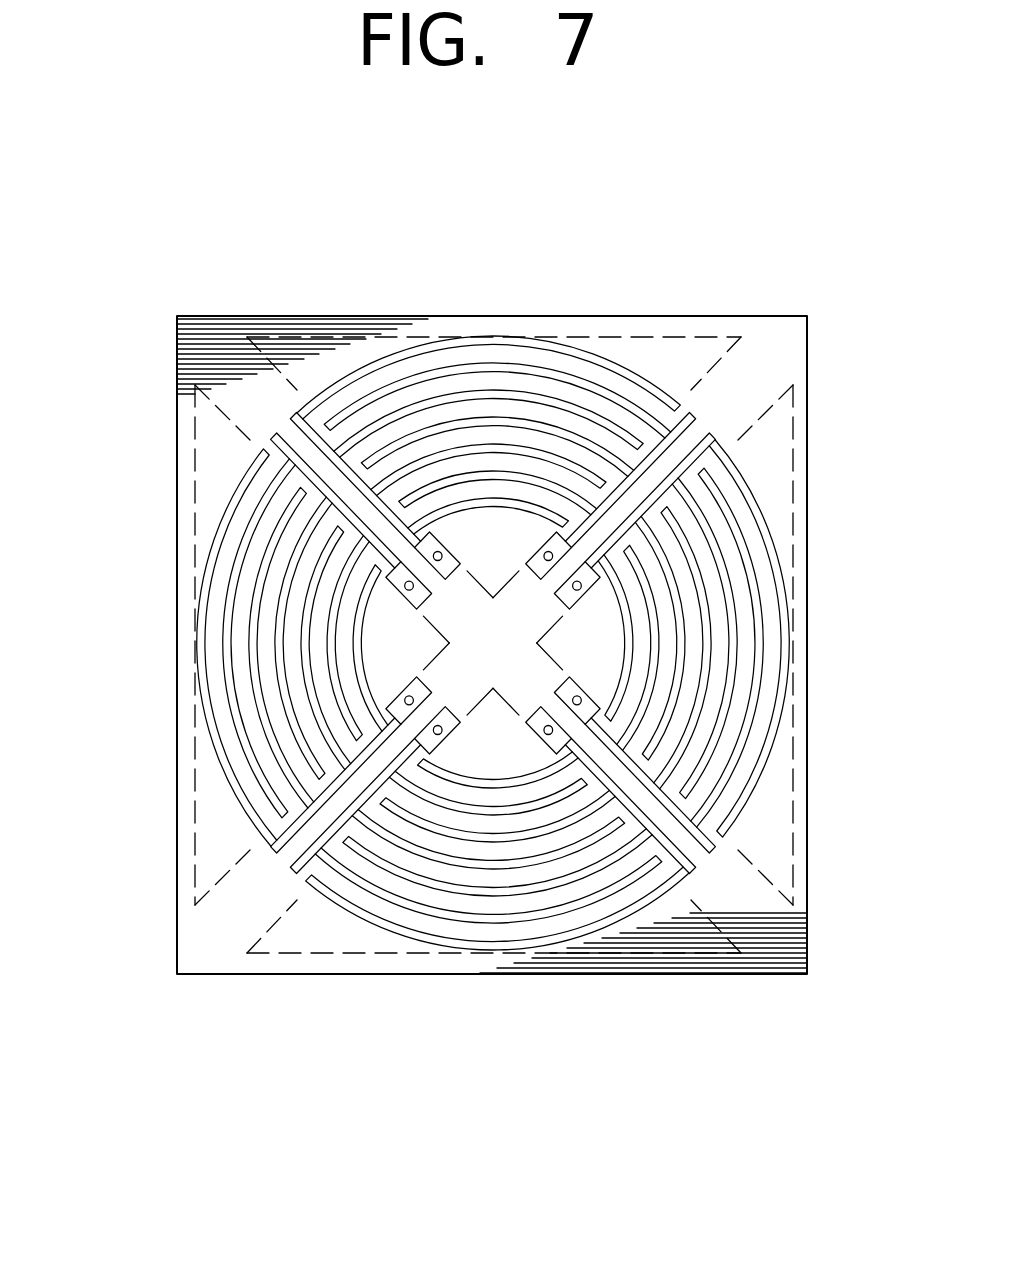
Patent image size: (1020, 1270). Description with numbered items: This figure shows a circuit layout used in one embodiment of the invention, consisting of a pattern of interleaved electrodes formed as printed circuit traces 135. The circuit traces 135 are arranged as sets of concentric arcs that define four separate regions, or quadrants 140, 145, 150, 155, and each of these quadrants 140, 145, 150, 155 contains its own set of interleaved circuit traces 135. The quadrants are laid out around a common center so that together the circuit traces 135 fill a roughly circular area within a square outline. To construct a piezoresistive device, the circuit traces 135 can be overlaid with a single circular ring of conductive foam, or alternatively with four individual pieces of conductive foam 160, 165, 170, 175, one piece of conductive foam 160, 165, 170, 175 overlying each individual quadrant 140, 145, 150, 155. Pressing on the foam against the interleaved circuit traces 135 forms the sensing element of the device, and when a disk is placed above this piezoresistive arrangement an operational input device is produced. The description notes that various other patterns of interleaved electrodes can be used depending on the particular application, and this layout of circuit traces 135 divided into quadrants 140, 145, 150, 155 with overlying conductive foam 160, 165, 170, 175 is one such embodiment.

The circuit traces 135 is at (400, 352).
The quadrant 140 is at (712, 352).
The quadrant 145 is at (778, 466).
The quadrant 150 is at (698, 932).
The quadrant 155 is at (203, 863).
The conductive foam 160 is at (605, 340).
The conductive foam 165 is at (790, 838).
The conductive foam 170 is at (348, 942).
The conductive foam 175 is at (200, 479).